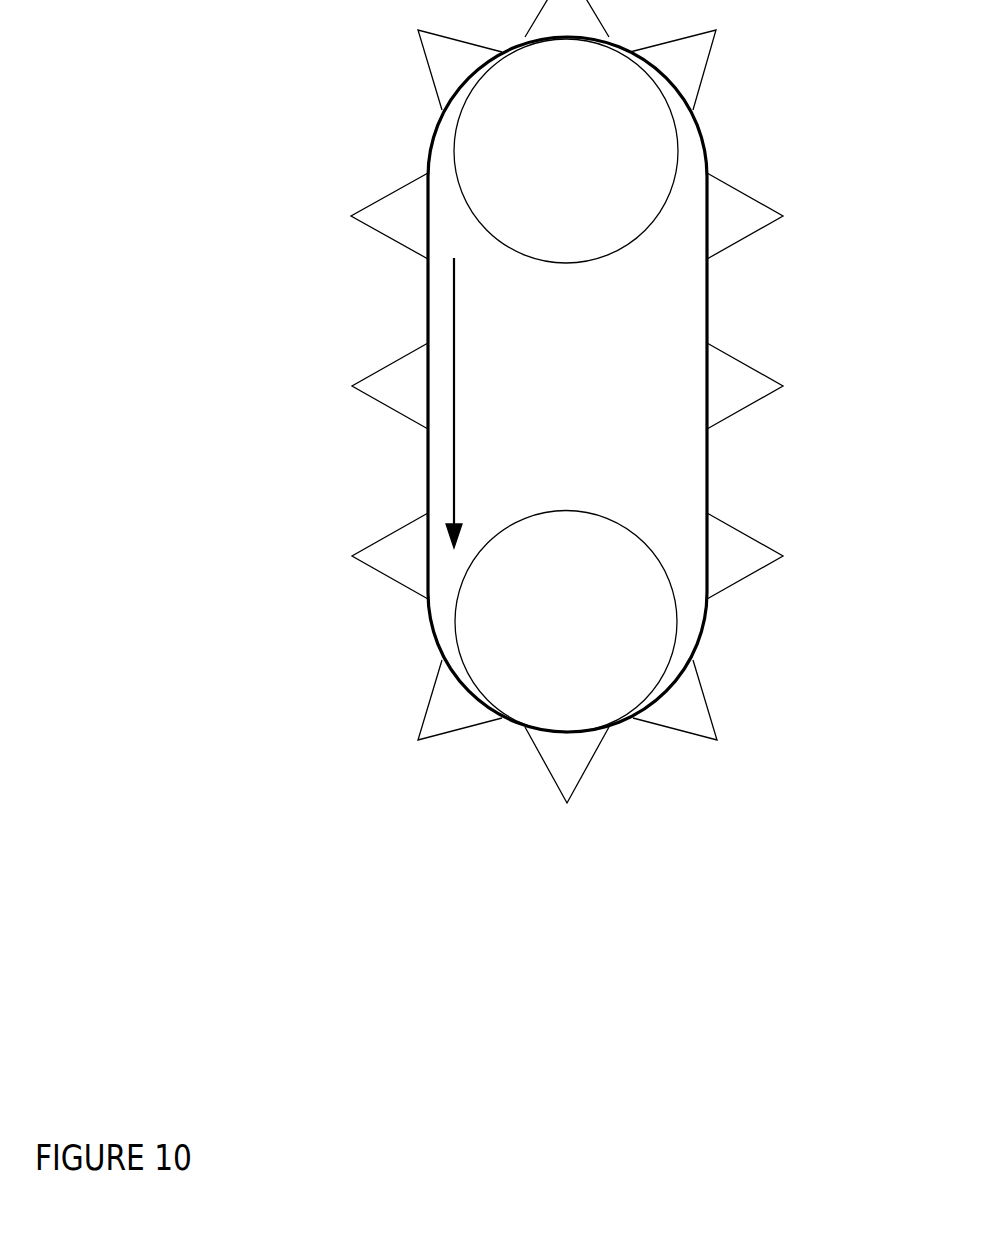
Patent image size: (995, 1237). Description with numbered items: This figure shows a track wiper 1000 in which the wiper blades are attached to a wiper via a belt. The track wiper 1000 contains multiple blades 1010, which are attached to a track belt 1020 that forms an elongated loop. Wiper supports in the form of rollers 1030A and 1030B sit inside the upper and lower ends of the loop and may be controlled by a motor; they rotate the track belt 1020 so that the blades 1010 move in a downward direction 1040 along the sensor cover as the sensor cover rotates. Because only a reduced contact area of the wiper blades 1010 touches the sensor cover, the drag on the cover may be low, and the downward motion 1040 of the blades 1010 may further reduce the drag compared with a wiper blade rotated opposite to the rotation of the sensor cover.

The track wiper 1000 is at (658, 472).
The blades 1010 is at (350, 217).
The track belt 1020 is at (428, 290).
The roller 1030A is at (468, 160).
The roller 1030B is at (464, 643).
The downward direction 1040 is at (453, 467).